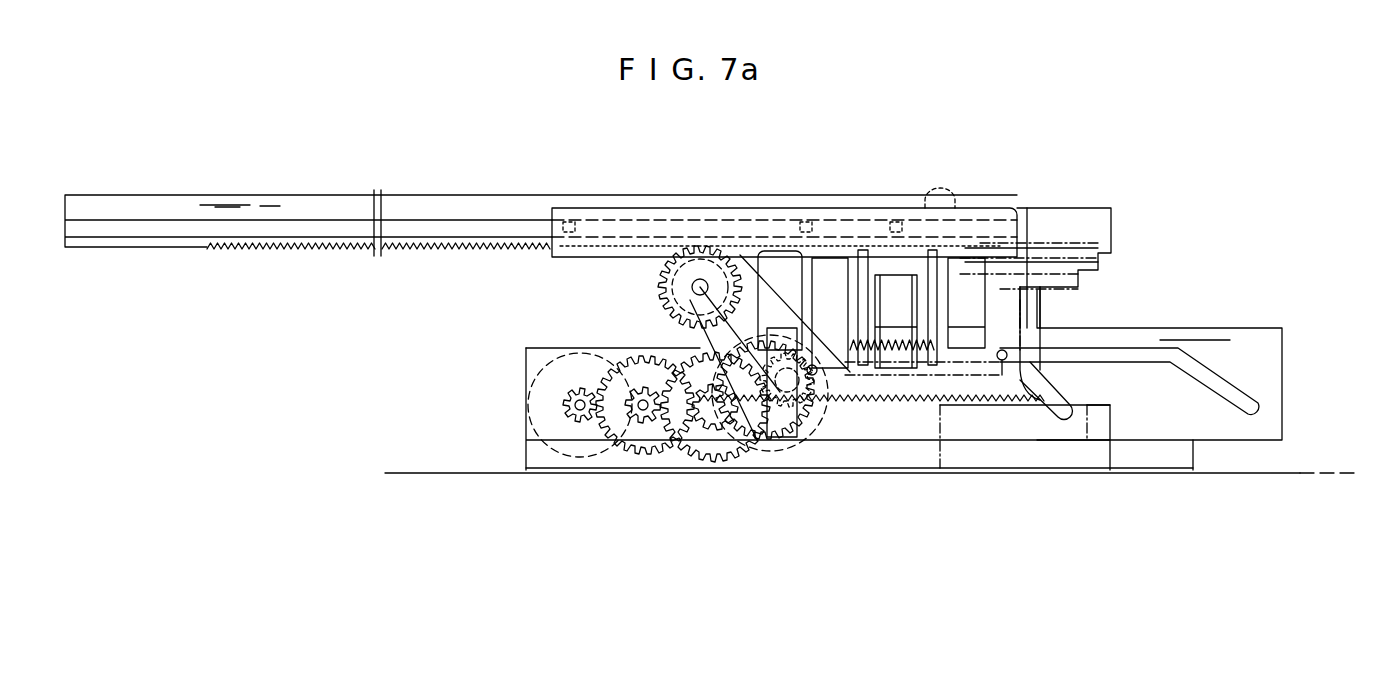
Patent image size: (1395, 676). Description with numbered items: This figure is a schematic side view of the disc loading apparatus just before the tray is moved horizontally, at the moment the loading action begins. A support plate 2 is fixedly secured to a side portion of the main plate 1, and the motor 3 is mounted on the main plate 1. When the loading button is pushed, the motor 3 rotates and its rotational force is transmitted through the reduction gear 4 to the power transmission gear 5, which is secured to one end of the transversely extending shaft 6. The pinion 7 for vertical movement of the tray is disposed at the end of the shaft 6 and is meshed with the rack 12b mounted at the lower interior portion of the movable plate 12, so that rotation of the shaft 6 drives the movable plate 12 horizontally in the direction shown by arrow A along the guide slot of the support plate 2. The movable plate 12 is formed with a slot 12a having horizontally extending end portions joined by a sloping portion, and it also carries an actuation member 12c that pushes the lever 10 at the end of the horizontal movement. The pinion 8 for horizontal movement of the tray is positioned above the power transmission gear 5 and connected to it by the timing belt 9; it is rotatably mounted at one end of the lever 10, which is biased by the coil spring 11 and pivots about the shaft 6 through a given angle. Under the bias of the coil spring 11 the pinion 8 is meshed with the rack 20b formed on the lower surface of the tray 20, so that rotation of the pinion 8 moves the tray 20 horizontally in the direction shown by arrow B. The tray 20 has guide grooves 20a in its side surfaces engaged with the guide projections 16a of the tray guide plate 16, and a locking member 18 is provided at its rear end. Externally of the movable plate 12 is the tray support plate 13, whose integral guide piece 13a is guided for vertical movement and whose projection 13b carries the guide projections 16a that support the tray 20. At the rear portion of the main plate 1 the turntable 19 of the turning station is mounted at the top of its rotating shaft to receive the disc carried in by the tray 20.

The main plate 1 is at (1266, 478).
The support plate 2 is at (948, 460).
The motor 3 is at (540, 407).
The reduction gear 4 is at (680, 442).
The power transmission gear 5 is at (740, 442).
The shaft 6 is at (790, 442).
The pinion 7 is at (830, 442).
The pinion 8 is at (660, 284).
The timing belt 9 is at (765, 285).
The lever 10 is at (705, 323).
The coil spring 11 is at (920, 310).
The movable plate 12 is at (1137, 410).
The slot 12a is at (1238, 383).
The rack 12b is at (875, 402).
The actuation member 12c is at (1010, 440).
The tray support plate 13 is at (640, 212).
The guide piece 13a is at (910, 280).
The projection 13b is at (1010, 410).
The tray guide plate 16 is at (1082, 212).
The guide projection 16a is at (806, 222).
The locking member 18 is at (940, 200).
The turntable 19 is at (1112, 264).
The tray 20 is at (322, 192).
The guide groove 20a is at (476, 252).
The rack 20b is at (340, 252).
The arrow A is at (1200, 340).
The arrow B is at (225, 205).